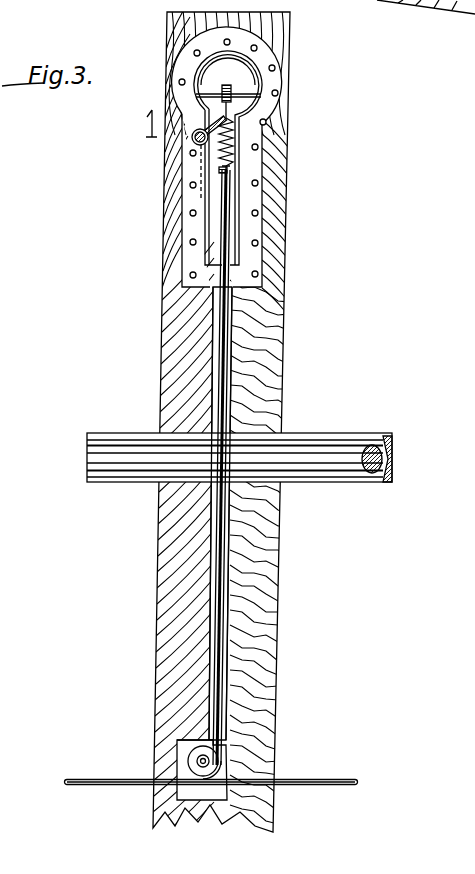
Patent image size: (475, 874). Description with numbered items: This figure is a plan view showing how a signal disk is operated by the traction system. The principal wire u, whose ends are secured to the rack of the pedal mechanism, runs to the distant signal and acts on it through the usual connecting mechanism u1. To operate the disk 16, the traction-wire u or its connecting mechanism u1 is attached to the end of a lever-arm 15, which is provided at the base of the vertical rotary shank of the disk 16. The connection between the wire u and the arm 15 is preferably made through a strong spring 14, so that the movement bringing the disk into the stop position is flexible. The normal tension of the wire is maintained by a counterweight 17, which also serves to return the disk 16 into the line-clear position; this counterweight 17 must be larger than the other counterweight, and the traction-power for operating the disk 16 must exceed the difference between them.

The spring 14 is at (158, 167).
The lever-arm 15 is at (203, 144).
The disk 16 is at (257, 137).
The counterweight 17 is at (228, 91).
The principal wire u is at (97, 770).
The connecting mechanism u1 is at (222, 622).